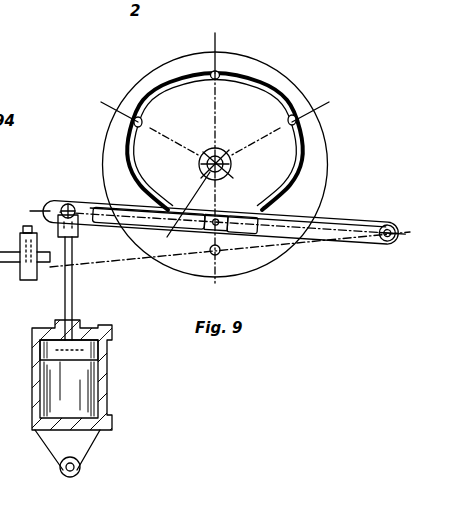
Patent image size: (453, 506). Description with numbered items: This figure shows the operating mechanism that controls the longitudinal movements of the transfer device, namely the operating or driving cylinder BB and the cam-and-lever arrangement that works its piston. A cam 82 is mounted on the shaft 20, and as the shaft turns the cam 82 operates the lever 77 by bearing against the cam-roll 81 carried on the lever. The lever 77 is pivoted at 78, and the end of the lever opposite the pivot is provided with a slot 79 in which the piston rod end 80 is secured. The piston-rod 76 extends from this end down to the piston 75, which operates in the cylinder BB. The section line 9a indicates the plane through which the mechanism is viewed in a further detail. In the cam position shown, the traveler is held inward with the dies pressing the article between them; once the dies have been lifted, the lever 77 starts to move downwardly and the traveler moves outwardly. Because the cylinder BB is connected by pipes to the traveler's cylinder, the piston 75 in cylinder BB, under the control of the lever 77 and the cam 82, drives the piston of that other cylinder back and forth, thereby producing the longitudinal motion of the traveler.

The shaft 20 is at (222, 155).
The cam 82 is at (317, 171).
The pivot 78 is at (384, 228).
The lever 77 is at (223, 247).
The cam-roll 81 is at (206, 220).
The section line 9a is at (230, 240).
The slot 79 is at (61, 209).
The piston rod end 80 is at (78, 226).
The piston-rod 76 is at (68, 287).
The piston 75 is at (107, 348).
The driving cylinder BB is at (107, 385).